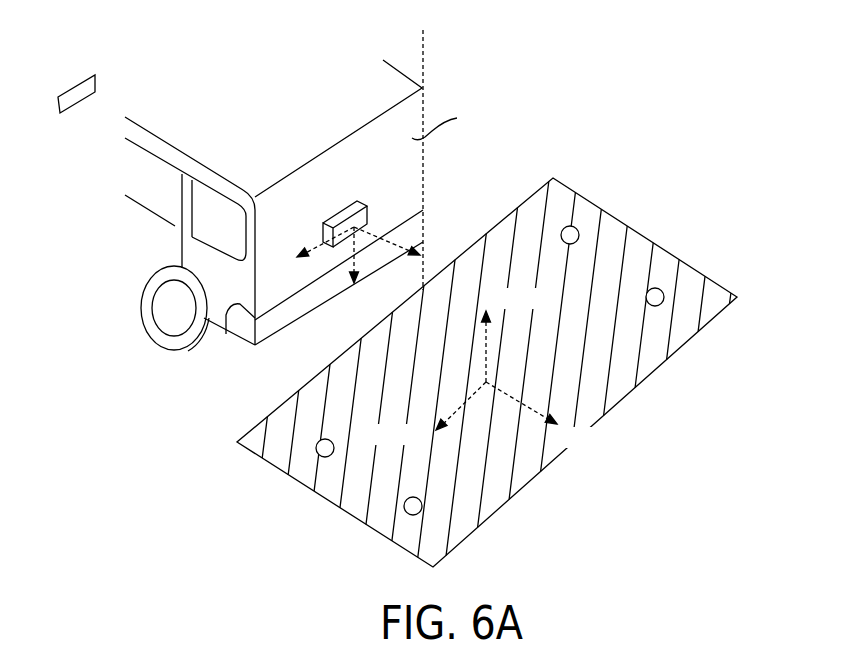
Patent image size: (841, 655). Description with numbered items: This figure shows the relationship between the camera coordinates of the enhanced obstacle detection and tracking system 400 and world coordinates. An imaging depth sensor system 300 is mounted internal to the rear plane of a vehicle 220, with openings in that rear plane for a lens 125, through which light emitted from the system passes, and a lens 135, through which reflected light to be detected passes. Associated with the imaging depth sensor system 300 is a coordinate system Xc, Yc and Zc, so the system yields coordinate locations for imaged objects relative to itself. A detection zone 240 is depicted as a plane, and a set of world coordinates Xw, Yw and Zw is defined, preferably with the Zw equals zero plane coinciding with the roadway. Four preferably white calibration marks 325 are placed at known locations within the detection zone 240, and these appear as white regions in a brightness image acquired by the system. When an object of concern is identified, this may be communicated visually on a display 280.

The enhanced obstacle detection and tracking system 400 is at (332, 68).
The vehicle 220 is at (288, 136).
The display 280 is at (95, 73).
The imaging depth sensor system 300 is at (356, 203).
The lens 135 is at (345, 230).
The lens 125 is at (360, 220).
The detection zone 240 is at (623, 226).
The calibration marks 325 is at (567, 227).